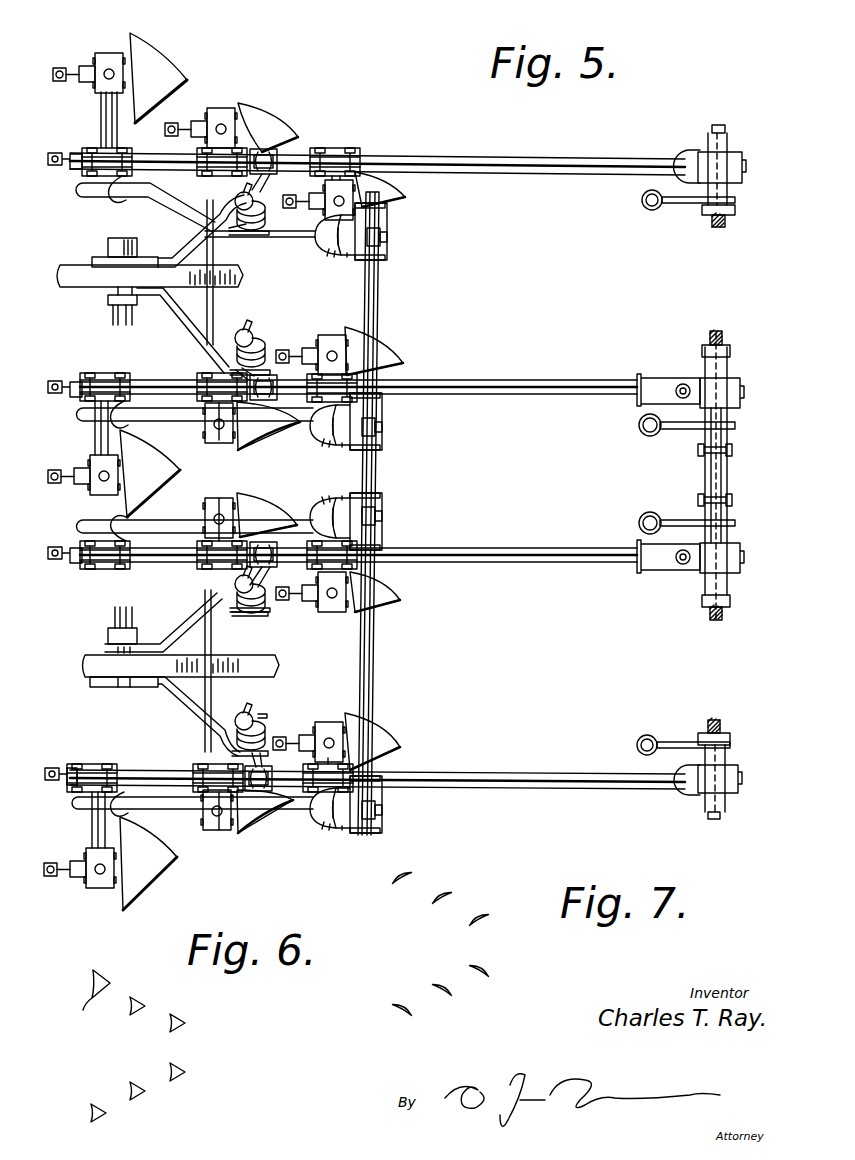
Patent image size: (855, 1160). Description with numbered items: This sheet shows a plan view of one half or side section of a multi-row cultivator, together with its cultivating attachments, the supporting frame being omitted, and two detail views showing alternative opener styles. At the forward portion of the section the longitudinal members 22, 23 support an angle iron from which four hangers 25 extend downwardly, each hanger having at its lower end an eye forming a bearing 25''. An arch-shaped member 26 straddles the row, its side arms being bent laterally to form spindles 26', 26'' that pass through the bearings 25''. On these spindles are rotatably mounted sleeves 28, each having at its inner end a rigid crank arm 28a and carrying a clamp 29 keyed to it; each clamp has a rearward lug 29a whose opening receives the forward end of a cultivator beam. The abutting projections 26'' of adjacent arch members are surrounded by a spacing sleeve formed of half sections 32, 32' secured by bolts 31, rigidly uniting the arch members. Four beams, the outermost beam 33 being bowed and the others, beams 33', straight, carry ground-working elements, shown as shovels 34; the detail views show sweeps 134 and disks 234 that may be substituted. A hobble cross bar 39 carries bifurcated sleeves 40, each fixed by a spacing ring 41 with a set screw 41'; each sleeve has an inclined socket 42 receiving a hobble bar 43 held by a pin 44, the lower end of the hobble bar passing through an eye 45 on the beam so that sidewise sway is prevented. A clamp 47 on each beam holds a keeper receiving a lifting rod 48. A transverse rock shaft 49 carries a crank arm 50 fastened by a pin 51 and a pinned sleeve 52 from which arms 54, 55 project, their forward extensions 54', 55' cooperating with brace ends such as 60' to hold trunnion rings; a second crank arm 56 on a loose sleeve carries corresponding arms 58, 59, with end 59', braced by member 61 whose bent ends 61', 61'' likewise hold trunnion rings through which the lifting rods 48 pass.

In FIG. 5, the longitudinal member 22 is at (232, 290).
In FIG. 5, the longitudinal member 23 is at (273, 676).
In FIG. 5, the hanger 25 is at (687, 477).
In FIG. 5, the bearing 25'' is at (748, 474).
In FIG. 5, the arch-shaped member 26 is at (738, 473).
In FIG. 5, the spindle 26' is at (738, 486).
In FIG. 5, the spindle 26'' is at (760, 470).
In FIG. 5, the sleeve 28 is at (728, 808).
In FIG. 5, the crank arm 28a is at (660, 740).
In FIG. 5, the clamp 29 is at (742, 770).
In FIG. 5, the lug 29a is at (688, 798).
In FIG. 5, the bolt 31 is at (732, 503).
In FIG. 5, the half section 32 is at (686, 488).
In FIG. 5, the half section 32' is at (759, 497).
In FIG. 5, the cultivator beam 33 is at (377, 794).
In FIG. 5, the cultivator beam 33' is at (377, 371).
In FIG. 5, the shovel 34 is at (180, 860).
In FIG. 6, the shovel 34 is at (97, 1046).
In FIG. 5, the hobble cross bar 39 is at (380, 693).
In FIG. 5, the sleeve 40 is at (381, 832).
In FIG. 5, the spacing ring 41 is at (405, 529).
In FIG. 5, the set screw 41' is at (412, 518).
In FIG. 5, the socket 42 is at (325, 818).
In FIG. 5, the hobble bar 43 is at (290, 812).
In FIG. 5, the pin 44 is at (334, 819).
In FIG. 5, the eye 45 is at (123, 812).
In FIG. 5, the clamp 47 is at (258, 791).
In FIG. 5, the lifting rod 48 is at (243, 710).
In FIG. 5, the rock shaft 49 is at (128, 622).
In FIG. 5, the crank arm 50 is at (108, 256).
In FIG. 5, the pin 51 is at (125, 240).
In FIG. 5, the sleeve 52 is at (108, 638).
In FIG. 5, the arm 54 is at (199, 716).
In FIG. 5, the forward extension 54' is at (224, 746).
In FIG. 5, the arm 55 is at (186, 621).
In FIG. 5, the forward extension 55' is at (270, 627).
In FIG. 5, the second crank arm 56 is at (110, 300).
In FIG. 5, the arm 58 is at (195, 325).
In FIG. 5, the arm 59 is at (213, 231).
In FIG. 5, the forward extension 59' is at (265, 215).
In FIG. 5, the brace end 60' is at (284, 710).
In FIG. 5, the brace member 61 is at (197, 476).
In FIG. 5, the brace end 61' is at (260, 341).
In FIG. 5, the brace end 61'' is at (283, 270).
In FIG. 5, the sweep 134 is at (400, 746).
In FIG. 6, the sweep 134 is at (133, 1086).
In FIG. 7, the disk 234 is at (443, 996).